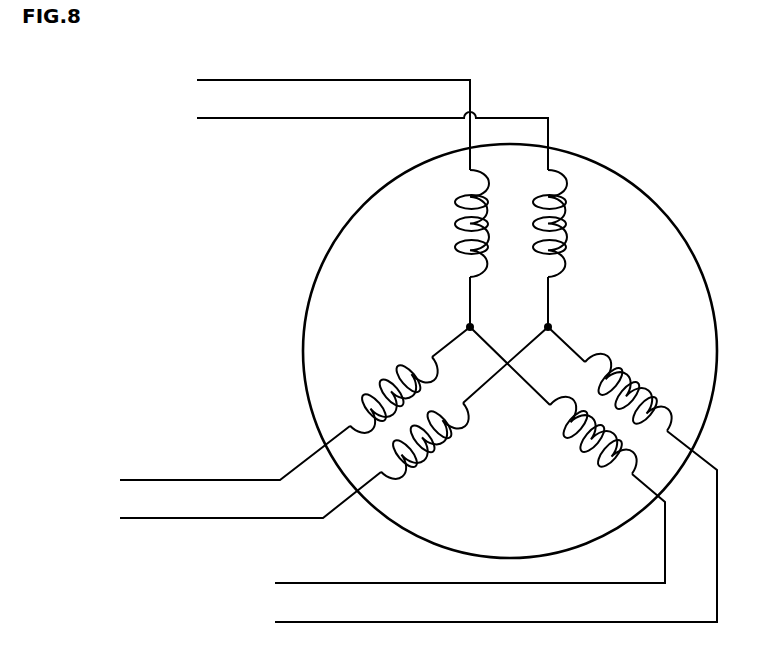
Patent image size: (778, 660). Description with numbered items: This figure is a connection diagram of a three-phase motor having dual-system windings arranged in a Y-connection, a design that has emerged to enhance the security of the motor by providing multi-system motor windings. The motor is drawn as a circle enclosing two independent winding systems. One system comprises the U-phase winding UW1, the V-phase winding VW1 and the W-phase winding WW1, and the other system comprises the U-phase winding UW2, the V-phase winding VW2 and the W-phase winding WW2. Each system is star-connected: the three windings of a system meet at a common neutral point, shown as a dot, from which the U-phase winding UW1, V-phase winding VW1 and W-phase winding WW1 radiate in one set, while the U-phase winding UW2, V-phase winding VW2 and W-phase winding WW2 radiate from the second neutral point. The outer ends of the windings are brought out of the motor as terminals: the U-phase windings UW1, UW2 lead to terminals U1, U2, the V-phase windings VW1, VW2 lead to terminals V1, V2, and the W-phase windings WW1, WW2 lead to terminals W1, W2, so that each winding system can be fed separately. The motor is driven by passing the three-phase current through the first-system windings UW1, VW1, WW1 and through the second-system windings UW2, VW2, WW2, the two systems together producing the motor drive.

The U-phase first terminal U1 is at (314, 119).
The U-phase second terminal U2 is at (353, 138).
The V-phase first terminal V1 is at (451, 534).
The V-phase second terminal V2 is at (477, 532).
The W-phase first terminal W1 is at (215, 459).
The W-phase second terminal W2 is at (230, 501).
The U-phase winding UW1 is at (448, 223).
The U-phase winding UW2 is at (576, 223).
The V-phase winding VW1 is at (592, 437).
The V-phase winding VW2 is at (627, 394).
The W-phase winding WW1 is at (392, 393).
The W-phase winding WW2 is at (429, 439).